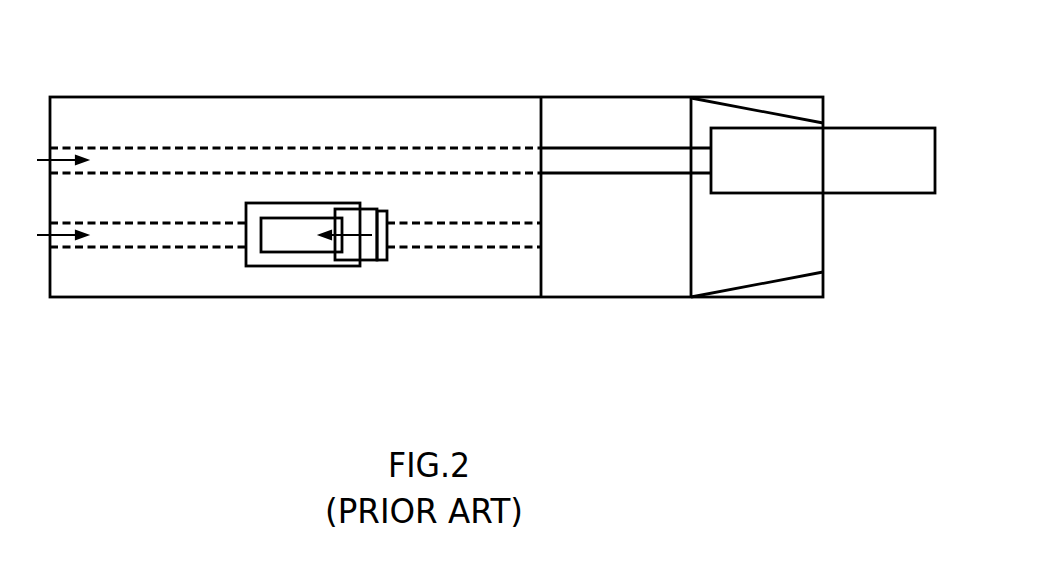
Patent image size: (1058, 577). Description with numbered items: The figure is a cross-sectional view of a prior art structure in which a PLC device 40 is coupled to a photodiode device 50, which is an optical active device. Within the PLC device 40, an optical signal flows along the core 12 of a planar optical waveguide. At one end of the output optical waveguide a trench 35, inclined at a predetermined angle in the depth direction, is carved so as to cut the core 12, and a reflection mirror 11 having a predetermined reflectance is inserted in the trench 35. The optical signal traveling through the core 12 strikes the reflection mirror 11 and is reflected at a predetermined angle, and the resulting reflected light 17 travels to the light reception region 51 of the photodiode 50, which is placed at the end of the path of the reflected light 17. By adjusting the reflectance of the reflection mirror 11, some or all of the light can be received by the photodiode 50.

The PLC device 40 is at (223, 97).
The core of the planar optical waveguide 12 is at (163, 242).
The photodiode device 50 is at (265, 258).
The light reception region 51 is at (302, 253).
The reflected light 17 is at (343, 248).
The trench 35 is at (368, 265).
The reflection mirror 11 is at (388, 217).